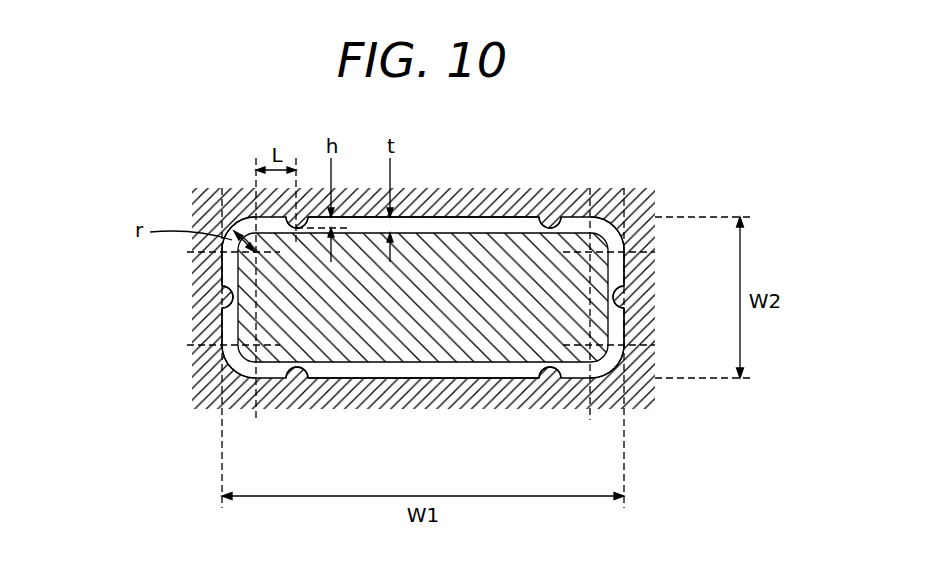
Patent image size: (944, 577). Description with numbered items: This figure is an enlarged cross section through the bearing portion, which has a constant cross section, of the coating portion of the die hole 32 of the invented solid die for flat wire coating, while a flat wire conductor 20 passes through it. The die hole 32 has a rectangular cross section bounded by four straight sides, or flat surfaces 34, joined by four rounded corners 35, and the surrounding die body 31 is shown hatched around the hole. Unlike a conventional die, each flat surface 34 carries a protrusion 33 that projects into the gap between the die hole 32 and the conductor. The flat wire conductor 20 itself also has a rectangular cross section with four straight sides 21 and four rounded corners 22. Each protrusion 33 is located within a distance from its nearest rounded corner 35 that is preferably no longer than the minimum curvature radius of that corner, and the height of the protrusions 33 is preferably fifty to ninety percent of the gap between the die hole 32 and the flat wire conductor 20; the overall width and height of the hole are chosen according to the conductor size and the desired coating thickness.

The flat wire conductor 20 is at (247, 277).
The straight sides 21 is at (232, 332).
The rounded corners 22 is at (218, 368).
The mold 31 is at (463, 395).
The die hole 32 is at (375, 380).
The protrusions 33 is at (300, 382).
The straight sides (flat surfaces) 34 is at (495, 217).
The rounded corners 35 is at (238, 222).